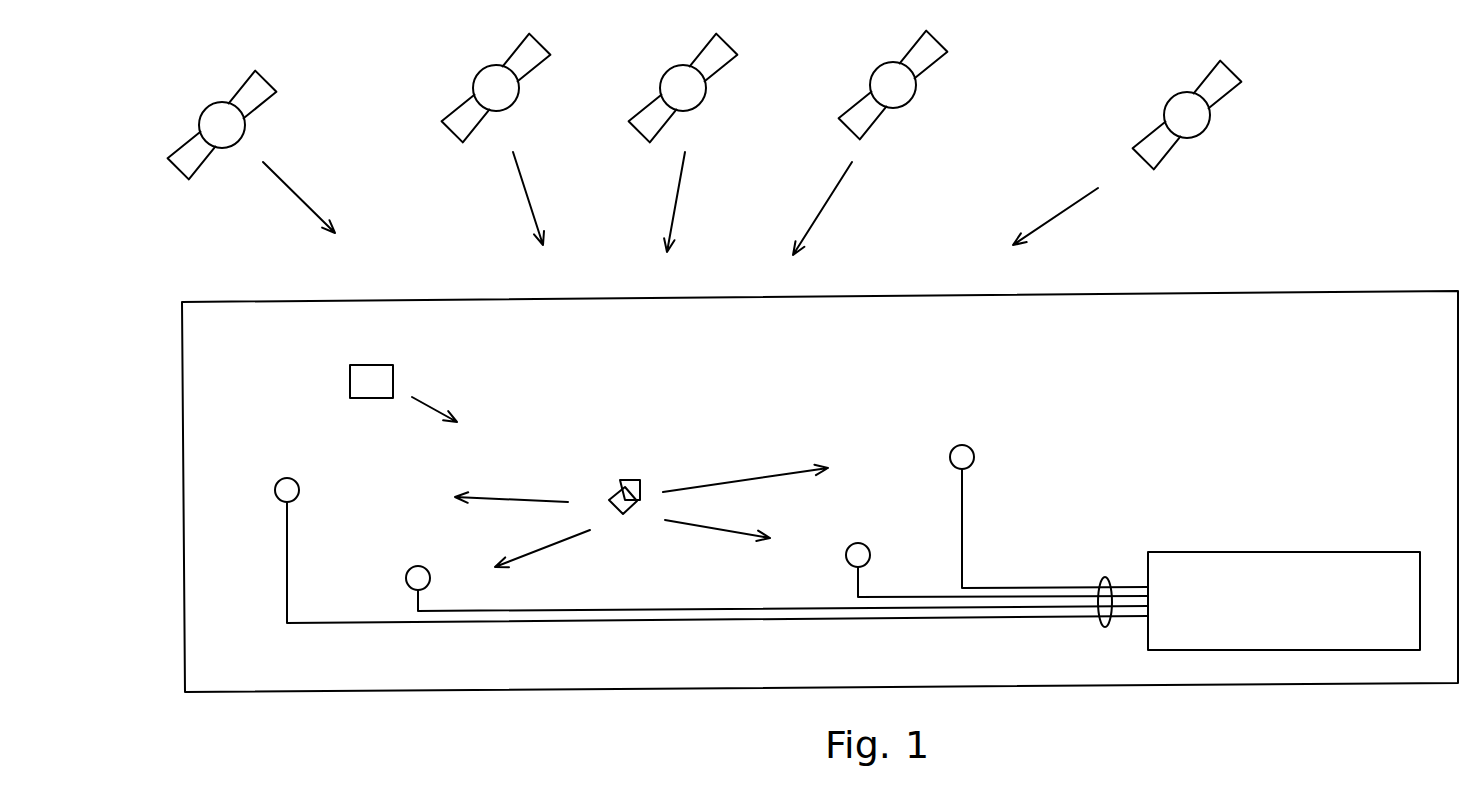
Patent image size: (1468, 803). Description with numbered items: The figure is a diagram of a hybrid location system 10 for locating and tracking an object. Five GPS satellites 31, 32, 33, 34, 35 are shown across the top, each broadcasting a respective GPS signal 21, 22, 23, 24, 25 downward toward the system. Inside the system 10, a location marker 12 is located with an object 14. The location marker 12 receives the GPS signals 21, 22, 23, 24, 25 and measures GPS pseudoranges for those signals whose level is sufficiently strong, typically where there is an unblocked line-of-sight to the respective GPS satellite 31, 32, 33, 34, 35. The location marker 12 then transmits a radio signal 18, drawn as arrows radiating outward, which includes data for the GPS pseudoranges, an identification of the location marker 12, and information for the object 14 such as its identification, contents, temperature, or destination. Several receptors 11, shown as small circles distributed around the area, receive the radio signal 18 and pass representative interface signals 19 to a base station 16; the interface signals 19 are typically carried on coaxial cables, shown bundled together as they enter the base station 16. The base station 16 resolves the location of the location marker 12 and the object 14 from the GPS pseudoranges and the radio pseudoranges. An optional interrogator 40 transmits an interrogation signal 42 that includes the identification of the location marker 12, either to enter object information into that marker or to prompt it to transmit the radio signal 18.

The hybrid location system 10 is at (382, 692).
The receptors 11 is at (278, 477).
The location marker 12 is at (637, 480).
The object 14 is at (613, 492).
The base station 16 is at (1394, 615).
The radio signal 18 is at (520, 498).
The interface signals 19 is at (1102, 580).
The GPS signal 21 is at (293, 195).
The GPS signal 22 is at (525, 193).
The GPS signal 23 is at (677, 193).
The GPS signal 24 is at (830, 195).
The GPS signal 25 is at (1063, 213).
The GPS satellite 31 is at (202, 112).
The GPS satellite 32 is at (475, 75).
The GPS satellite 33 is at (662, 75).
The GPS satellite 34 is at (873, 72).
The GPS satellite 35 is at (1168, 103).
The interrogator 40 is at (348, 373).
The interrogation signal 42 is at (427, 402).